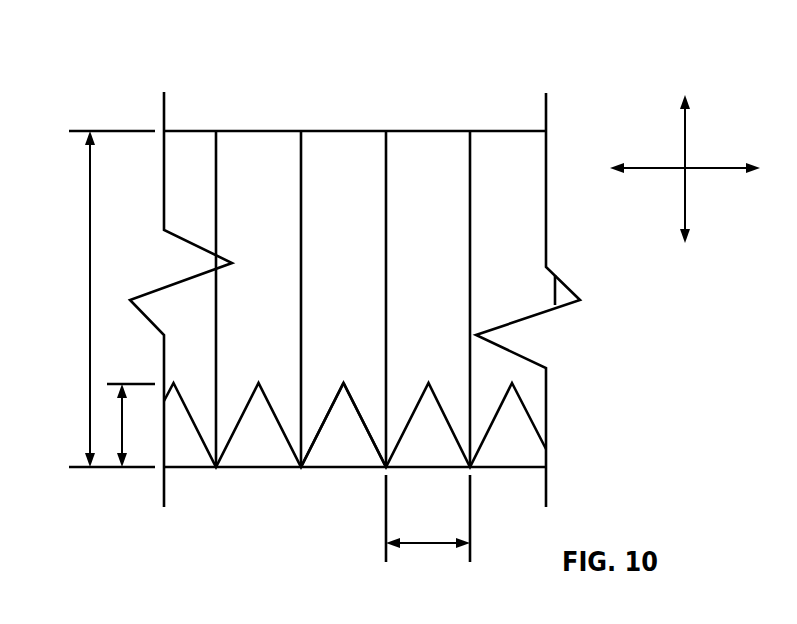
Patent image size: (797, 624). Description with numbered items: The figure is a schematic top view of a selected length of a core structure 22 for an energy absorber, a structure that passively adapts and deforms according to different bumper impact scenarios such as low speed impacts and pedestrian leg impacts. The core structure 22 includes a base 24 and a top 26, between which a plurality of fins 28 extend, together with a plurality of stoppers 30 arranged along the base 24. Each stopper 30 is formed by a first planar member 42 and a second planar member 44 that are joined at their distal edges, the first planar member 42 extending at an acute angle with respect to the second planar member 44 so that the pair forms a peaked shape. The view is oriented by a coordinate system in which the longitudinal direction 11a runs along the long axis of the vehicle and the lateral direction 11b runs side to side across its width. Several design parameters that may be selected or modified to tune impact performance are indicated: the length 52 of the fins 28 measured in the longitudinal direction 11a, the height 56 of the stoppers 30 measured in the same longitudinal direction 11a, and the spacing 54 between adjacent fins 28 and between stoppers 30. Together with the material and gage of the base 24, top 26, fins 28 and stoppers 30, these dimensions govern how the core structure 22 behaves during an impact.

The core structure 22 is at (410, 56).
The base 24 is at (340, 468).
The top 26 is at (340, 131).
The fins 28 is at (386, 163).
The stoppers 30 is at (428, 348).
The first planar member 42 is at (330, 408).
The second planar member 44 is at (358, 410).
The length of the fins 52 is at (89, 300).
The spacing 54 is at (430, 545).
The height of the stoppers 56 is at (122, 427).
The longitudinal direction 11a is at (682, 140).
The lateral direction 11b is at (658, 168).